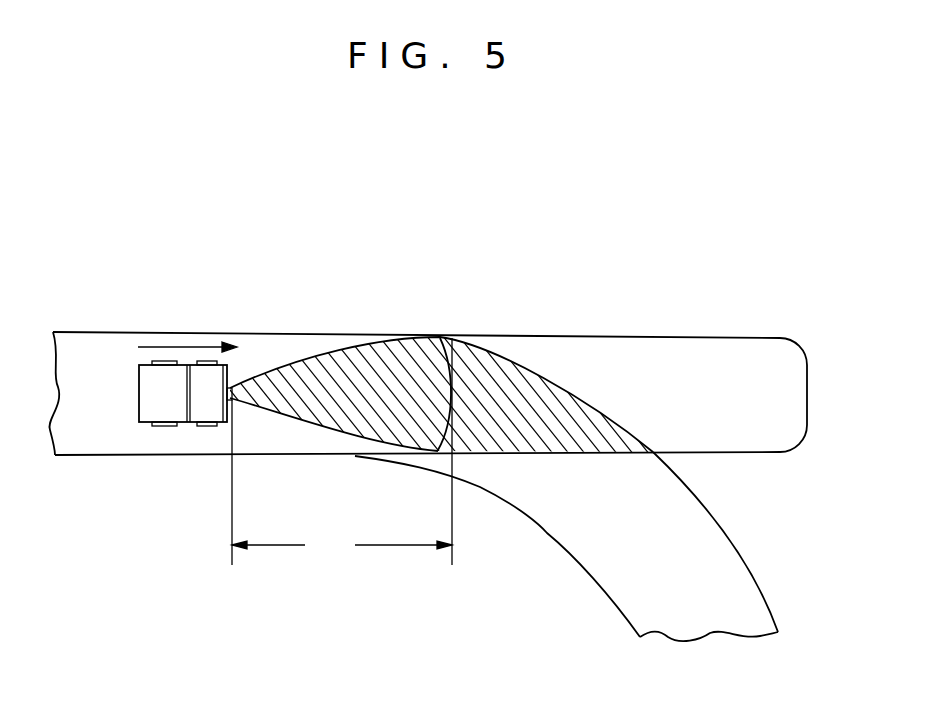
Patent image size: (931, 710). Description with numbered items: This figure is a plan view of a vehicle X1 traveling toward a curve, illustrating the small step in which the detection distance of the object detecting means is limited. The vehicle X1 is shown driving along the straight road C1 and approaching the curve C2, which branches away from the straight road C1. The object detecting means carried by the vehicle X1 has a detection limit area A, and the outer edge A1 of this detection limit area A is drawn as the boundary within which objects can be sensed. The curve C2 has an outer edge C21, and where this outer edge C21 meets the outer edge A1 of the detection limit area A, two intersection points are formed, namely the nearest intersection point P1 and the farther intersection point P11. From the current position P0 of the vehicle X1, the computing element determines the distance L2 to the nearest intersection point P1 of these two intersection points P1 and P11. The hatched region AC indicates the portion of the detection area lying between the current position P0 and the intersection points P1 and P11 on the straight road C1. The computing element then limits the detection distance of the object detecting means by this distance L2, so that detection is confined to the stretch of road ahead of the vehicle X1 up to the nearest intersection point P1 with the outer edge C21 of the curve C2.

The straight road C1 is at (102, 345).
The vehicle X1 is at (148, 417).
The current position P0 is at (232, 400).
The detection / coverage area AC is at (368, 406).
The nearest intersection point P1 is at (441, 337).
The outer edge of the detection limit area A1 is at (635, 338).
The detection limit area A is at (742, 362).
The intersection point P11 is at (653, 452).
The outer edge of the curve C21 is at (750, 563).
The curve C2 is at (723, 606).
The distance L2 is at (342, 451).